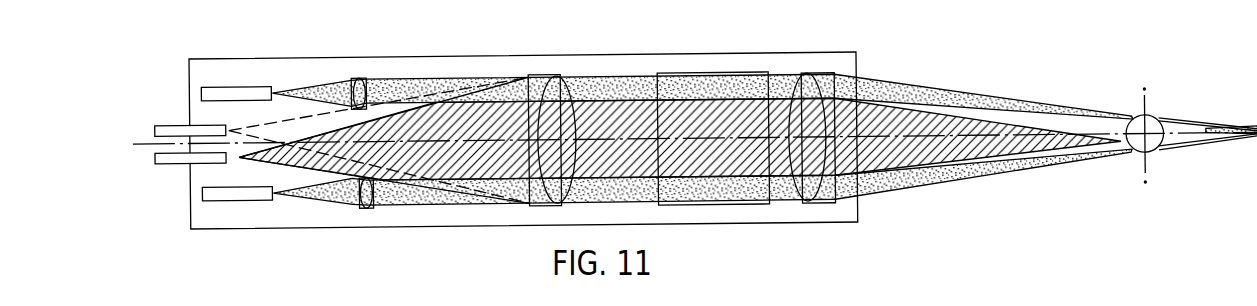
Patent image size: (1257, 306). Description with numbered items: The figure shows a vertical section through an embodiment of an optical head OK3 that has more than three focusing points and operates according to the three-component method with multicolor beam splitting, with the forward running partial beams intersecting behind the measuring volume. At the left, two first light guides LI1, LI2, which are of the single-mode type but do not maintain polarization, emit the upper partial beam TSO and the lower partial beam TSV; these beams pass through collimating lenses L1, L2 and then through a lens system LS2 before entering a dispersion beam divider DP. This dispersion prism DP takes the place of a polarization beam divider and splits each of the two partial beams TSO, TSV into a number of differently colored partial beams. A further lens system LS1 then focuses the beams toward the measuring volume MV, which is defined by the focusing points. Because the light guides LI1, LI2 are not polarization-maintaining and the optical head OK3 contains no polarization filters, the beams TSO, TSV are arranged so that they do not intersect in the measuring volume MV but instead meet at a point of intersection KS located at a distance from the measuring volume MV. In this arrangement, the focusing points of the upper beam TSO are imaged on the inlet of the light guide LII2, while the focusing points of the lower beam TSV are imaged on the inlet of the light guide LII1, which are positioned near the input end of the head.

The first light guide LI1 is at (217, 92).
The first light guide LI2 is at (245, 196).
The light guide LII1 is at (168, 128).
The light guide LII2 is at (168, 162).
The first collimating lens L1 is at (353, 80).
The second collimating lens L2 is at (361, 210).
The lens system 2 LS2 is at (556, 112).
The optical head OK3 is at (615, 59).
The dispersion beam divider DP is at (714, 108).
The lens system 1 LS1 is at (808, 112).
The upper partial beam TSO is at (948, 100).
The lower partial beam TSV is at (948, 188).
The measuring volume MV is at (1150, 125).
The point of intersection KS is at (1245, 139).